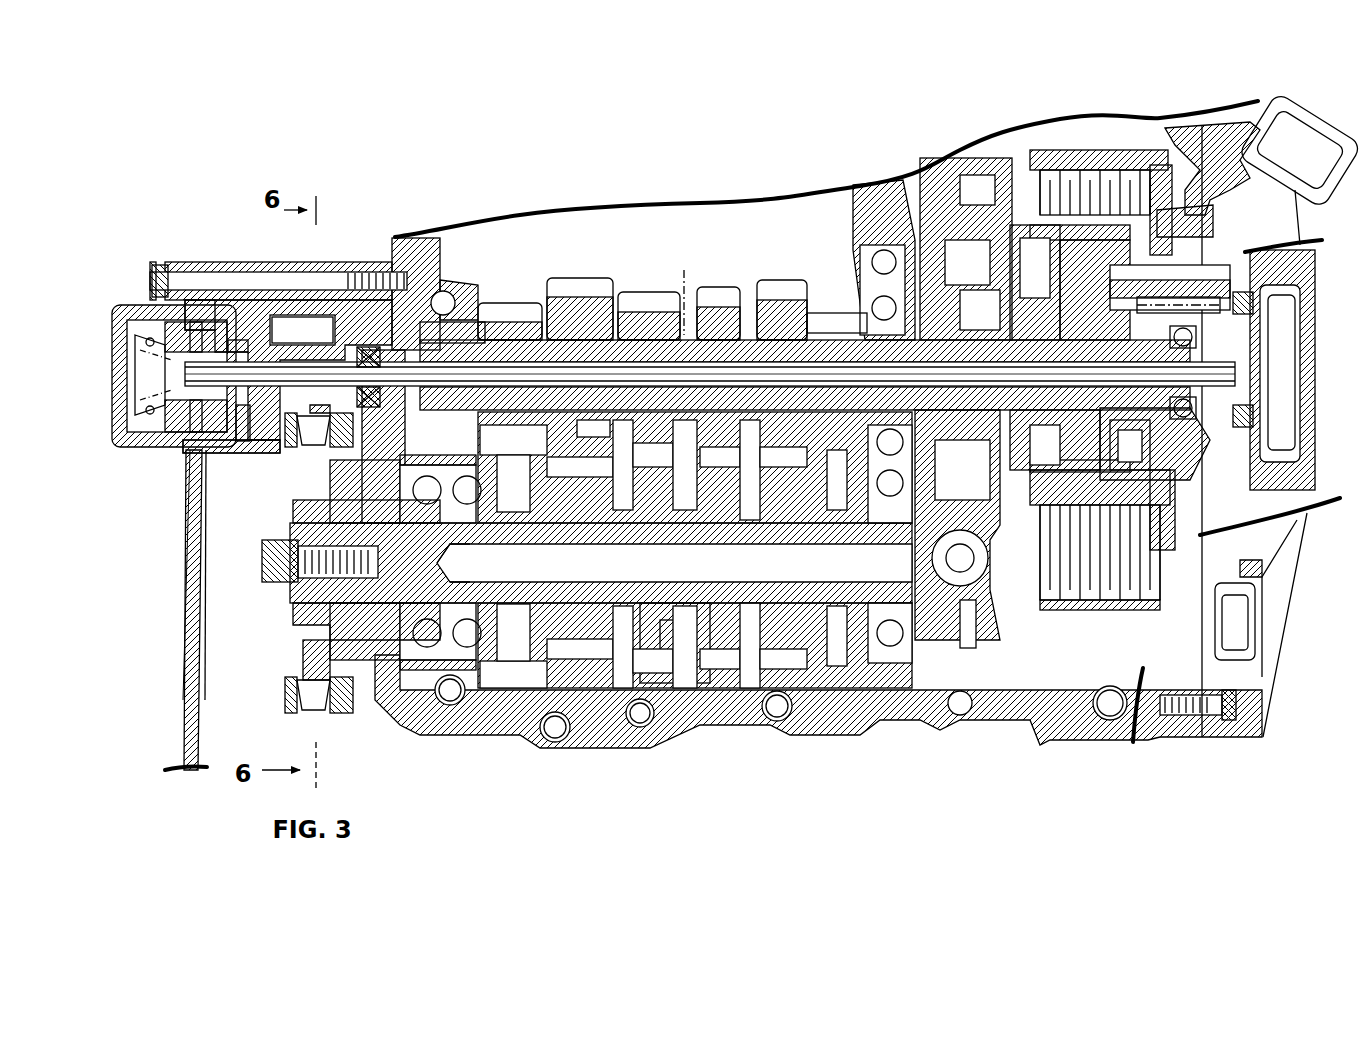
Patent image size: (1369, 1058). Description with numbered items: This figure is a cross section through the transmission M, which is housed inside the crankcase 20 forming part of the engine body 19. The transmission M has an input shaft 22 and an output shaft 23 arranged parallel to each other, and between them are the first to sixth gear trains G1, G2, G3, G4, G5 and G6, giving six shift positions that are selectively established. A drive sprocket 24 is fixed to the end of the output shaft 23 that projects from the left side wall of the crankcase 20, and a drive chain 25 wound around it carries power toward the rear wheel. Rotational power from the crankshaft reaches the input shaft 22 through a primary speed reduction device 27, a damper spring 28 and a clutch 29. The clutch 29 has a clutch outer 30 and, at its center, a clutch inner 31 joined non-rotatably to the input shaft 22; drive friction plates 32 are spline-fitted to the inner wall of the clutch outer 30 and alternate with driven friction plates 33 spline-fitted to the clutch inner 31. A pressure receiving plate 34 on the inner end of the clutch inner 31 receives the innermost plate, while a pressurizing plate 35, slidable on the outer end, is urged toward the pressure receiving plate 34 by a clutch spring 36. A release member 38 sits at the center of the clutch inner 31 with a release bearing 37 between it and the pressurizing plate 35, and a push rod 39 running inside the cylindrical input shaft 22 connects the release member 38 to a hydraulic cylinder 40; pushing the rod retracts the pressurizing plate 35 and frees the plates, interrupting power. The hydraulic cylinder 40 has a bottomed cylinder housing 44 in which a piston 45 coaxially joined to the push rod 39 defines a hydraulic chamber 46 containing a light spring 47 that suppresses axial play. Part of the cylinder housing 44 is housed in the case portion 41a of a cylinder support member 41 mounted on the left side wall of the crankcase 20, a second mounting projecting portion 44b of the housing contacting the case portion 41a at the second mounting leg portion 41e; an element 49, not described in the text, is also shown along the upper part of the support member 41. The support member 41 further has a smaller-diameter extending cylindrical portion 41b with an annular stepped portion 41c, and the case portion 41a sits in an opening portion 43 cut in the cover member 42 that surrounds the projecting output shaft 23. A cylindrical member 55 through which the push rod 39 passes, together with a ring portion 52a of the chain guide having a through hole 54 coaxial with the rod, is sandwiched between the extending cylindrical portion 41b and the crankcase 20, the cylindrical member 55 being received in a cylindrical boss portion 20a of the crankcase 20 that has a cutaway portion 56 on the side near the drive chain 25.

The engine body 19 is at (905, 700).
The crankcase 20 is at (722, 712).
The cylindrical boss portion 20a is at (378, 330).
The input shaft 22 is at (640, 352).
The output shaft 23 is at (595, 605).
The drive sprocket 24 is at (305, 628).
The drive chain 25 is at (300, 688).
The primary speed reduction device 27 is at (987, 652).
The damper spring 28 is at (987, 565).
The clutch 29 is at (1136, 150).
The clutch outer 30 is at (1075, 602).
The clutch inner 31 is at (1065, 242).
The drive friction plates 32 is at (1112, 592).
The driven friction plates 33 is at (1130, 520).
The pressure receiving plate 34 is at (1022, 190).
The pressurizing plate 35 is at (1185, 207).
The clutch spring 36 is at (1200, 315).
The release bearing 37 is at (1192, 408).
The release member 38 is at (1196, 365).
The push rod 39 is at (742, 380).
The hydraulic cylinder 40 is at (142, 452).
The cylinder support member 41 is at (326, 256).
The case portion 41a is at (216, 455).
The extending cylindrical portion 41b is at (305, 335).
The annular stepped portion 41c is at (248, 312).
The second mounting leg portion 41e is at (197, 278).
The cover member 42 is at (187, 684).
The opening portion 43 is at (180, 448).
The cylinder housing 44 is at (128, 448).
The second mounting projecting portion 44b is at (158, 268).
The piston 45 is at (193, 296).
The hydraulic chamber 46 is at (147, 338).
The spring 47 is at (152, 448).
The fastening bolt 49 is at (260, 284).
The ring portion 52a is at (328, 446).
The through hole 54 is at (250, 446).
The cylindrical member 55 is at (440, 498).
The cutaway portion 56 is at (461, 563).
The transmission M is at (530, 275).
The first gear train G1 is at (838, 318).
The second gear train G2 is at (498, 306).
The third gear train G3 is at (657, 286).
The fourth gear train G4 is at (716, 282).
The fifth gear train G5 is at (800, 672).
The sixth gear train G6 is at (572, 280).